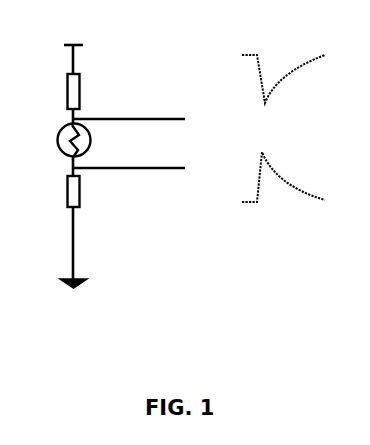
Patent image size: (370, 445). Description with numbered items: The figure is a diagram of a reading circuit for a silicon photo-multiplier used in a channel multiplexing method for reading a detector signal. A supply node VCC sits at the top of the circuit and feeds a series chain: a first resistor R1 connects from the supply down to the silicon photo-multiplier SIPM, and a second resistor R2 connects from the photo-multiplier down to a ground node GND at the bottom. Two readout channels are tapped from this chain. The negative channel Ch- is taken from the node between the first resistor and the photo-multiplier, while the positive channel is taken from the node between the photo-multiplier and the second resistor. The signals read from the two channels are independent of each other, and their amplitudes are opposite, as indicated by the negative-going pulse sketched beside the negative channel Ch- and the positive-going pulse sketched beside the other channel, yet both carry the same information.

The supply voltage terminal VCC is at (99, 46).
The first resistor R1 is at (57, 91).
The silicon photo-multiplier SIPM is at (96, 140).
The second resistor R2 is at (56, 191).
The ground terminal GND is at (97, 274).
The channel CH− Ch- is at (199, 92).